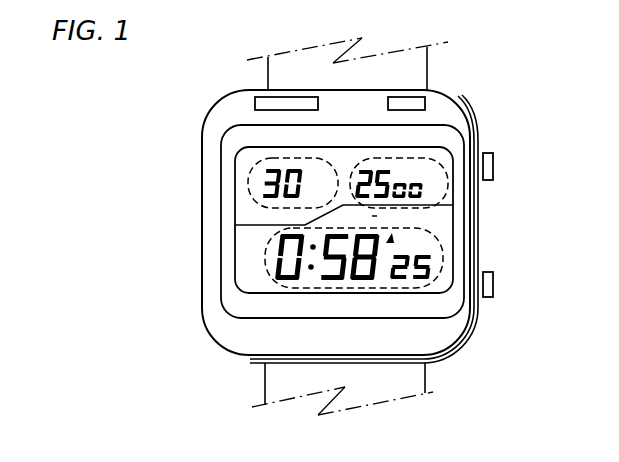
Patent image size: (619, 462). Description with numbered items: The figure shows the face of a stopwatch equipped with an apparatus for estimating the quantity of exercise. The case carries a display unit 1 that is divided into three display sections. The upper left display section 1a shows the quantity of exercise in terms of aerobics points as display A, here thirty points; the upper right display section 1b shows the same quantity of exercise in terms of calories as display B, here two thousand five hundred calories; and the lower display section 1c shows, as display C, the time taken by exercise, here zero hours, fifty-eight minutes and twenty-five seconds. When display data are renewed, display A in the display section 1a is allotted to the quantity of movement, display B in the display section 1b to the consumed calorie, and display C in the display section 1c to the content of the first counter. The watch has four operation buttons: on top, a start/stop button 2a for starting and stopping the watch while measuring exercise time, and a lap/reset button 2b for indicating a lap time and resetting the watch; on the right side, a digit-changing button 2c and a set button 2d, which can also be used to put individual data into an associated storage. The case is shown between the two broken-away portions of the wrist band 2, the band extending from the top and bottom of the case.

The display unit 1 is at (230, 289).
The display section 1a is at (250, 213).
The display section 1b is at (420, 172).
The display section 1c is at (432, 288).
The wrist band 2 is at (355, 105).
The start/stop button 2a is at (292, 102).
The lap/reset button 2b is at (405, 103).
The digit-changing button 2c is at (493, 170).
The set button 2d is at (493, 283).
The display A is at (254, 170).
The display B is at (443, 178).
The display C is at (293, 283).